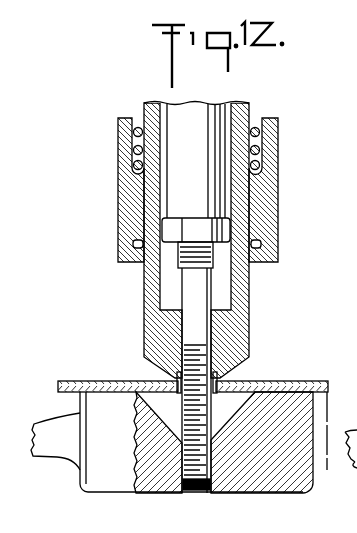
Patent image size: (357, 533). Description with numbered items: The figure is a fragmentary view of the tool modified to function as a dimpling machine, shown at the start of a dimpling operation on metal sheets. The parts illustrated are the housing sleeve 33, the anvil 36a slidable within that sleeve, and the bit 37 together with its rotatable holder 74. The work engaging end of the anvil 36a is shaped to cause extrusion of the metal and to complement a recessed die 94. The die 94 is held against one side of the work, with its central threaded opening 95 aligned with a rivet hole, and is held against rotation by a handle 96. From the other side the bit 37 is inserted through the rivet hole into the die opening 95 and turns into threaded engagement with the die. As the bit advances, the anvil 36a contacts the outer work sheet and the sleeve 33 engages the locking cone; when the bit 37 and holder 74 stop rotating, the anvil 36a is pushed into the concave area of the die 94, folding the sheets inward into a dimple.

The housing sleeve 33 is at (128, 147).
The rotatable holder 74 is at (178, 186).
The anvil 36a is at (152, 292).
The bit 37 is at (190, 325).
The recessed die 94 is at (155, 472).
The central threaded opening 95 is at (203, 487).
The handle 96 is at (52, 446).